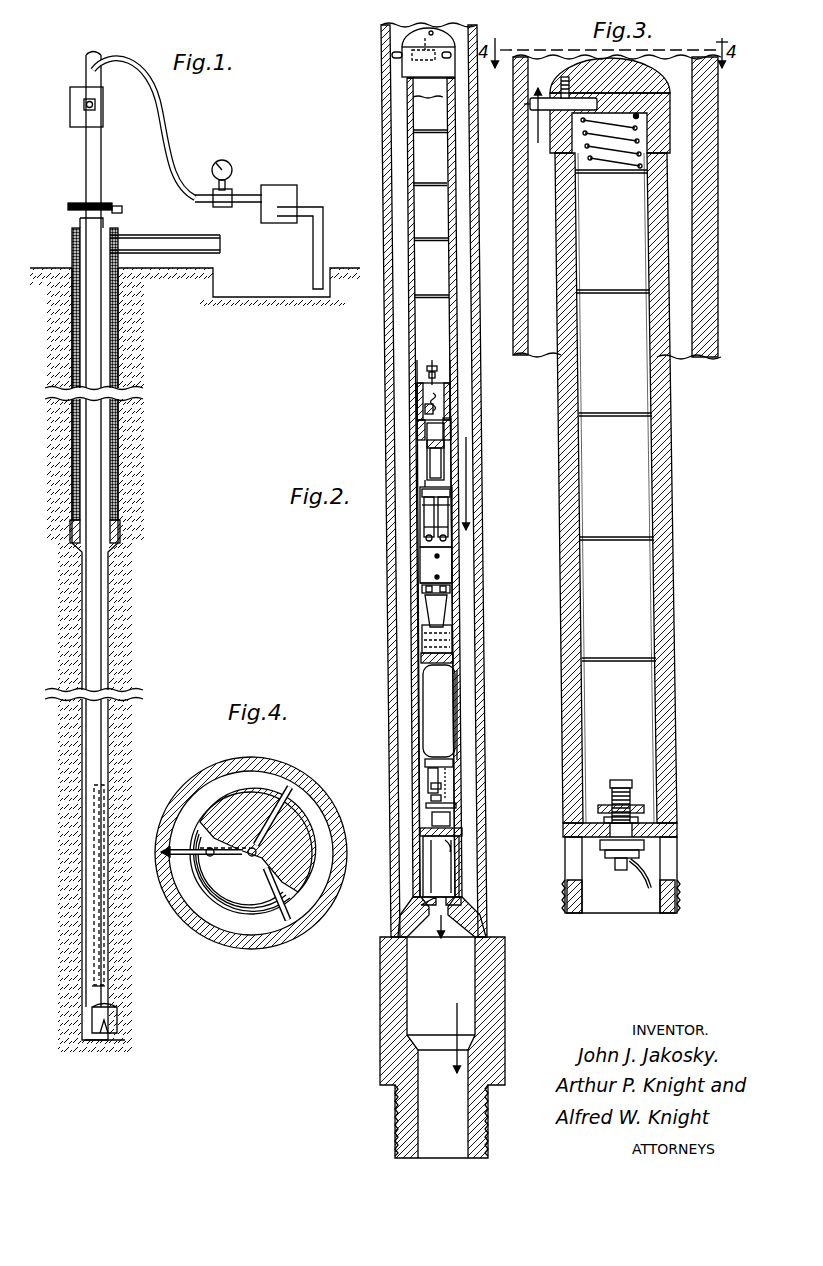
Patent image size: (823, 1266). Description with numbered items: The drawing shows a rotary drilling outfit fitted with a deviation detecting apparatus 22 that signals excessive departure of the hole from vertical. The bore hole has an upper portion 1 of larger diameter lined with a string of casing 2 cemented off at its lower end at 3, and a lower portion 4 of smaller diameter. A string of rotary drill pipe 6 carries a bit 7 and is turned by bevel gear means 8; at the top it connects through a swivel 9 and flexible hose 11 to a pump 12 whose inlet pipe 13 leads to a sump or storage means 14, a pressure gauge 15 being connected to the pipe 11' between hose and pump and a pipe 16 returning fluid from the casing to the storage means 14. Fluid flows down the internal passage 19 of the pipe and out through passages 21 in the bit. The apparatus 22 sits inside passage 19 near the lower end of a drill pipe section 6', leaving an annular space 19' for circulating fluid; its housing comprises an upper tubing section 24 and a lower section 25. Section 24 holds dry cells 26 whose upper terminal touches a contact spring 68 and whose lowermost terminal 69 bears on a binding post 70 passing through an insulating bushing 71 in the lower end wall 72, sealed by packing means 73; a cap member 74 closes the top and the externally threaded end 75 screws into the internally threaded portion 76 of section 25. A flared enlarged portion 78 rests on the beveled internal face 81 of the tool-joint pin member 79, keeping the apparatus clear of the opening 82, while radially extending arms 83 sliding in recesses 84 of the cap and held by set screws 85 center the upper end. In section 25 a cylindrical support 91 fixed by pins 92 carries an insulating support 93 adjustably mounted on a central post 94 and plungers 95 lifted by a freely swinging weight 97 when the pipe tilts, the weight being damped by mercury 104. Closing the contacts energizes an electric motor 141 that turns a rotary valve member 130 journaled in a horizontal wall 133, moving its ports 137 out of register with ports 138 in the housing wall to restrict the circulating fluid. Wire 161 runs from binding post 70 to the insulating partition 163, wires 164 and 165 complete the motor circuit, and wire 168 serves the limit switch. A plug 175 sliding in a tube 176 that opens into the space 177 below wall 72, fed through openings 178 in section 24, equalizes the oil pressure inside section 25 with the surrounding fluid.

In FIG. 1, the upper portion of bore hole 1 is at (120, 357).
In FIG. 1, the string of casing 2 is at (113, 455).
In FIG. 1, the cemented lower end of casing 3 is at (122, 533).
In FIG. 1, the lower portion of bore hole 4 is at (112, 648).
In FIG. 1, the rotary drill pipe 6 is at (115, 530).
In FIG. 1, the bit 7 is at (120, 1017).
In FIG. 1, the bevel gear means 8 is at (110, 205).
In FIG. 1, the swivel 9 is at (68, 107).
In FIG. 1, the flexible hose 11 is at (146, 128).
In FIG. 1, the pipe 11' is at (228, 217).
In FIG. 1, the pump 12 is at (298, 193).
In FIG. 1, the inlet pipe 13 is at (317, 230).
In FIG. 1, the sump or storage means 14 is at (302, 290).
In FIG. 1, the pressure gauge 15 is at (228, 161).
In FIG. 1, the pipe 16 is at (155, 228).
In FIG. 1, the internal passage of drill pipe 19 is at (129, 956).
In FIG. 2, the annular space 19' is at (453, 480).
In FIG. 1, the passages in bit 21 is at (95, 1022).
In FIG. 1, the deviation detecting apparatus 22 is at (92, 885).
In FIG. 2, the deviation detecting apparatus 22 is at (468, 556).
In FIG. 2, the upper housing section 24 is at (414, 303).
In FIG. 3, the upper housing section 24 is at (665, 498).
In FIG. 2, the lower housing section 25 is at (463, 683).
In FIG. 2, the dry cells 26 is at (443, 262).
In FIG. 3, the dry cells 26 is at (675, 632).
In FIG. 2, the drill pipe section 6' is at (492, 616).
In FIG. 3, the contact spring 68 is at (640, 150).
In FIG. 3, the lowermost terminal 69 is at (634, 784).
In FIG. 3, the binding post 70 is at (626, 797).
In FIG. 3, the insulating bushing 71 is at (608, 815).
In FIG. 2, the lower end wall 72 is at (420, 378).
In FIG. 3, the lower end wall 72 is at (660, 845).
In FIG. 3, the packing means 73 is at (592, 835).
In FIG. 2, the cap member 74 is at (407, 66).
In FIG. 3, the cap member 74 is at (670, 100).
In FIG. 3, the externally threaded portion 75 is at (676, 905).
In FIG. 2, the internally threaded portion 76 is at (418, 420).
In FIG. 2, the flared enlarged portion 78 is at (470, 968).
In FIG. 2, the pin member of tool joint 79 is at (497, 1035).
In FIG. 2, the beveled internal face portion 81 is at (480, 1046).
In FIG. 2, the opening through tool joint 82 is at (470, 1114).
In FIG. 4, the radially extending arms 83 is at (292, 790).
In FIG. 2, the radially extending arms 83 is at (395, 55).
In FIG. 3, the radially extending arms 83 is at (530, 106).
In FIG. 4, the recesses 84 is at (262, 795).
In FIG. 3, the recesses 84 is at (538, 145).
In FIG. 4, the set screws 85 is at (210, 858).
In FIG. 3, the set screws 85 is at (565, 80).
In FIG. 2, the cylindrical support 91 is at (442, 574).
In FIG. 2, the pins 92 is at (433, 556).
In FIG. 2, the insulating support 93 is at (452, 500).
In FIG. 2, the central post 94 is at (432, 542).
In FIG. 2, the plungers 95 is at (420, 594).
In FIG. 2, the weight or bob 97 is at (440, 614).
In FIG. 2, the heavy damping liquid 104 is at (450, 631).
In FIG. 2, the rotary valve member 130 is at (463, 845).
In FIG. 2, the horizontal wall 133 is at (458, 810).
In FIG. 2, the ports in valve member 137 is at (445, 882).
In FIG. 2, the ports in housing wall 138 is at (450, 858).
In FIG. 2, the electric motor 141 is at (428, 703).
In FIG. 2, the wire 161 is at (447, 410).
In FIG. 3, the wire 161 is at (636, 881).
In FIG. 2, the insulating partition member 163 is at (425, 432).
In FIG. 2, the wire 164 is at (428, 522).
In FIG. 2, the wire 165 is at (425, 643).
In FIG. 2, the wire 168 is at (453, 603).
In FIG. 2, the plug 175 is at (428, 468).
In FIG. 2, the tube 176 is at (428, 492).
In FIG. 2, the space 177 is at (422, 404).
In FIG. 2, the openings 178 is at (418, 394).